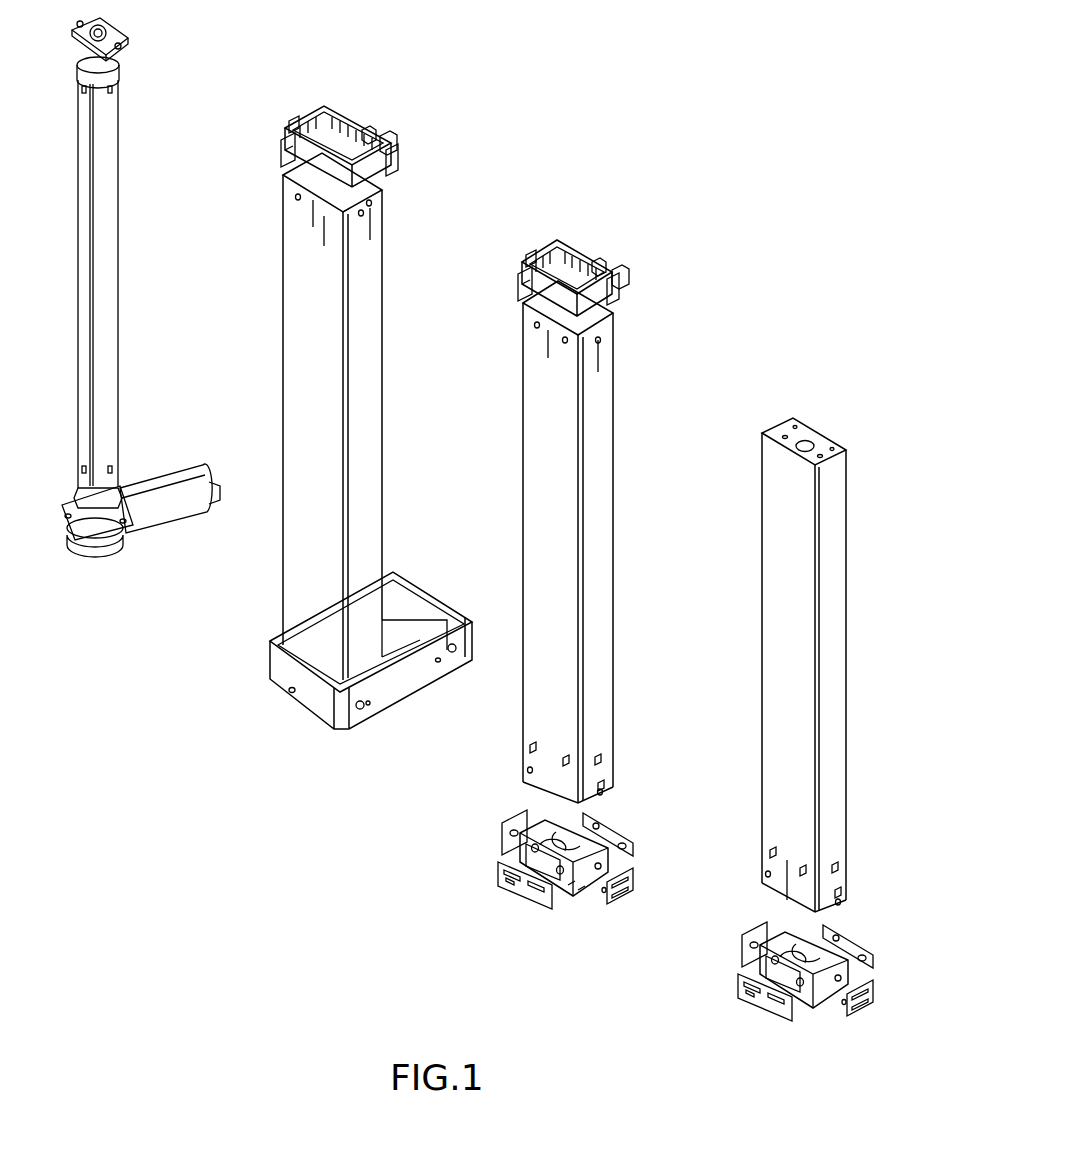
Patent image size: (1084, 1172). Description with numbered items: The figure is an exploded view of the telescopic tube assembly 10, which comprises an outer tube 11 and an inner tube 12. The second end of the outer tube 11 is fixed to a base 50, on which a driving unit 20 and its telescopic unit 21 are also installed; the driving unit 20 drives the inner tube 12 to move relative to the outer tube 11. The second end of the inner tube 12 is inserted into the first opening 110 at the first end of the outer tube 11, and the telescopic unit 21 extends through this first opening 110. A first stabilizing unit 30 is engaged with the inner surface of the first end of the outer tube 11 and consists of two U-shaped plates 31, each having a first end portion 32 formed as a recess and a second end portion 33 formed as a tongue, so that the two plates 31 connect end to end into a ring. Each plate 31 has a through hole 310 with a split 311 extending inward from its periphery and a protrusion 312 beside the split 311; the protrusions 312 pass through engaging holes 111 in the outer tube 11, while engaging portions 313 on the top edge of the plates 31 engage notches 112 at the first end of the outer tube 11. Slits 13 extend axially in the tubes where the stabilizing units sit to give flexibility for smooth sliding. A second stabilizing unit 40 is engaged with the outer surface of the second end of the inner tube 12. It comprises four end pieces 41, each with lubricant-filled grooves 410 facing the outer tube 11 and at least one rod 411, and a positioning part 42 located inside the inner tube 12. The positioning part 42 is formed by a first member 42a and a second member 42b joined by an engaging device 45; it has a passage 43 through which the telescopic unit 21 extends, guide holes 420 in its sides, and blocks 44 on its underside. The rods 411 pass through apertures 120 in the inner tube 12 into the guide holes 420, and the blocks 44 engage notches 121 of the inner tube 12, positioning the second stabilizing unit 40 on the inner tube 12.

The telescopic tube assembly 10 is at (342, 441).
The outer tube 11 is at (361, 416).
The inner tube 12 is at (680, 599).
The slits 13 is at (300, 212).
The driving unit 20 is at (182, 468).
The telescopic unit 21 is at (110, 222).
The first stabilizing unit 30 is at (430, 172).
The plates 31 is at (318, 112).
The first end portion 32 is at (368, 128).
The second end portion 33 is at (385, 137).
The through hole 310 is at (283, 150).
The split 311 is at (284, 165).
The protrusion 312 is at (288, 135).
The engaging portions 313 is at (392, 160).
The first opening 110 is at (385, 195).
The engaging holes 111 is at (365, 230).
The notches 112 is at (372, 215).
The aperture 120 is at (522, 770).
The notch 121 is at (605, 790).
The second stabilizing unit 40 is at (639, 928).
The end pieces 41 is at (552, 875).
The positioning part 42 is at (584, 906).
The first member 42a is at (575, 890).
The second member 42b is at (592, 905).
The passage 43 is at (600, 830).
The block 44 is at (607, 895).
The engaging device 45 is at (610, 868).
The groove 410 is at (500, 868).
The rod 411 is at (505, 832).
The guide hole 420 is at (522, 855).
The base 50 is at (272, 690).